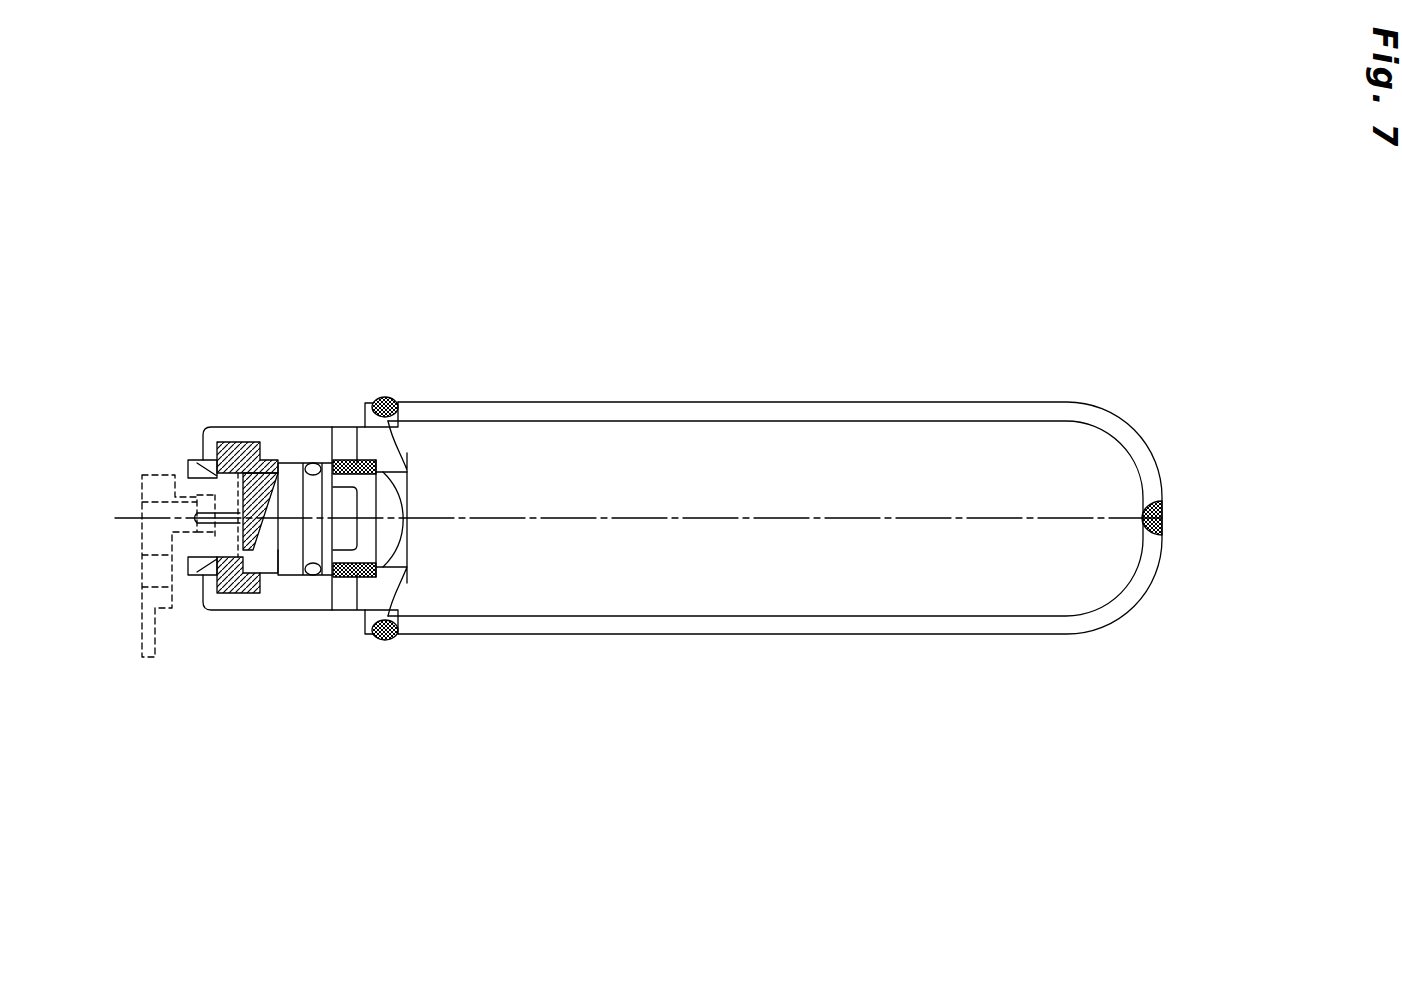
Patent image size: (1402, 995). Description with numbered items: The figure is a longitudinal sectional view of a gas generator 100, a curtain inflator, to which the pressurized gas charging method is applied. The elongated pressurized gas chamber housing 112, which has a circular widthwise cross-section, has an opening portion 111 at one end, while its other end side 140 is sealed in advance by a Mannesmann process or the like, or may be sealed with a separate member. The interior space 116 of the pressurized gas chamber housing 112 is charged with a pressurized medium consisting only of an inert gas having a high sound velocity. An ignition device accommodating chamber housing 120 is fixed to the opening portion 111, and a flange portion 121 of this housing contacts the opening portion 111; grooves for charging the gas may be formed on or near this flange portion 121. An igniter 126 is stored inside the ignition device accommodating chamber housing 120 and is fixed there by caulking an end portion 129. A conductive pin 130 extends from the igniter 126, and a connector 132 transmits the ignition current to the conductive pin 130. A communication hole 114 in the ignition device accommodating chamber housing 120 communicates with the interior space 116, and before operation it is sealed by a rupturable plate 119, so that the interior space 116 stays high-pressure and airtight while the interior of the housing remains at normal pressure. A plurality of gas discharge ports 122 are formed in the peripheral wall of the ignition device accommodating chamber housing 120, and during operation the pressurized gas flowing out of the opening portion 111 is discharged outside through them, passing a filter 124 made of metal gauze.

The gas generator 100 is at (653, 348).
The opening portion 111 is at (413, 600).
The pressurized gas chamber housing 112 is at (765, 402).
The communication hole 114 is at (400, 565).
The interior space 116 is at (777, 481).
The rupturable plate 119 is at (387, 528).
The ignition device accommodating chamber housing 120 is at (276, 440).
The flange portion 121 is at (383, 397).
The gas discharge ports 122 is at (342, 435).
The filter 124 is at (360, 477).
The igniter 126 is at (287, 565).
The end portion 129 is at (208, 595).
The conductive pin 130 is at (212, 508).
The connector 132 is at (152, 543).
The other end side 140 is at (1165, 514).